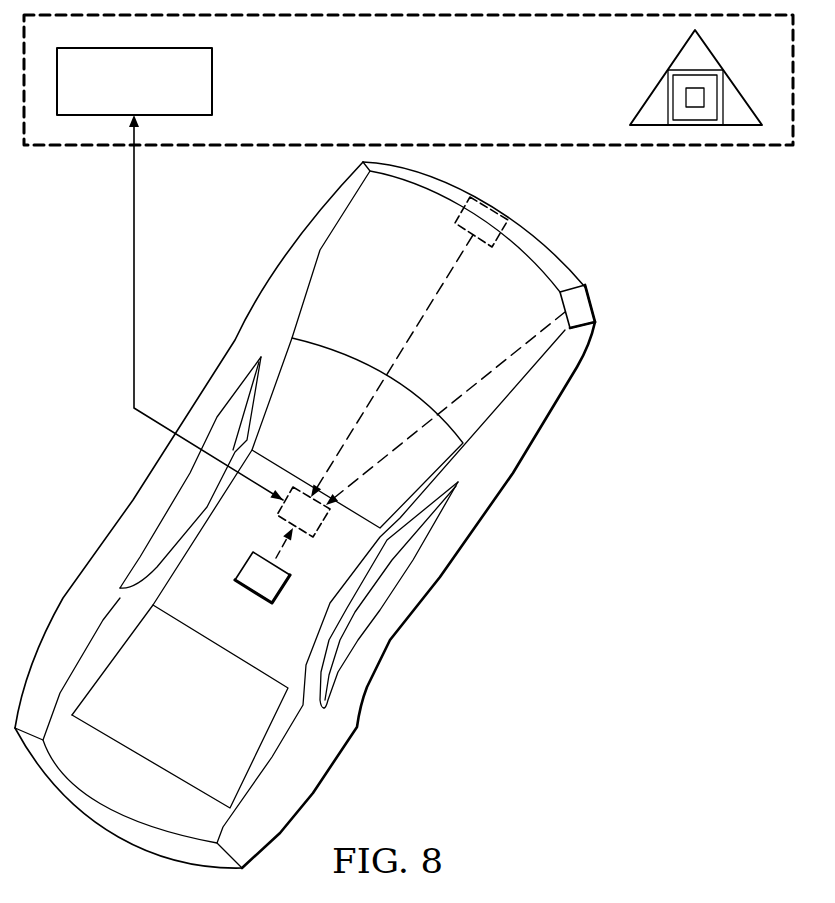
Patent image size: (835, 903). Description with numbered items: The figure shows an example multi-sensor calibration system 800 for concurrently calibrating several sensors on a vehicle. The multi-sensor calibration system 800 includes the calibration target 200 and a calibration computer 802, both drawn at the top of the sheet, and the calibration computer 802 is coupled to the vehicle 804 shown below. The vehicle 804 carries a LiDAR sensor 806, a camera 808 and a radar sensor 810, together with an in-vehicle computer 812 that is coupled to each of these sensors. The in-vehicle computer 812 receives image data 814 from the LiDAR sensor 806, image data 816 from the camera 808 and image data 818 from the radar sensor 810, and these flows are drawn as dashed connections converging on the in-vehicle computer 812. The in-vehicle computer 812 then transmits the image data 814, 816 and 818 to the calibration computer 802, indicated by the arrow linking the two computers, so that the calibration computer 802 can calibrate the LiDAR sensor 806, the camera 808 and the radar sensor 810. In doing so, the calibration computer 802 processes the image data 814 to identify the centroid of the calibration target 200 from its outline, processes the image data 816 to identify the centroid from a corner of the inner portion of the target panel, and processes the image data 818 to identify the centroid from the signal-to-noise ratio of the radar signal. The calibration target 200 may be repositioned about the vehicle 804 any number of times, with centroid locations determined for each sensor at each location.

The calibration target 200 is at (644, 90).
The multi-sensor calibration system 800 is at (580, 152).
The calibration computer 802 is at (213, 80).
The vehicle 804 is at (230, 336).
The LiDAR sensor 806 is at (283, 598).
The camera 808 is at (462, 208).
The radar sensor 810 is at (561, 302).
The in-vehicle computer 812 is at (288, 484).
The image data 814 is at (273, 559).
The image data 816 is at (432, 303).
The image data 818 is at (501, 361).